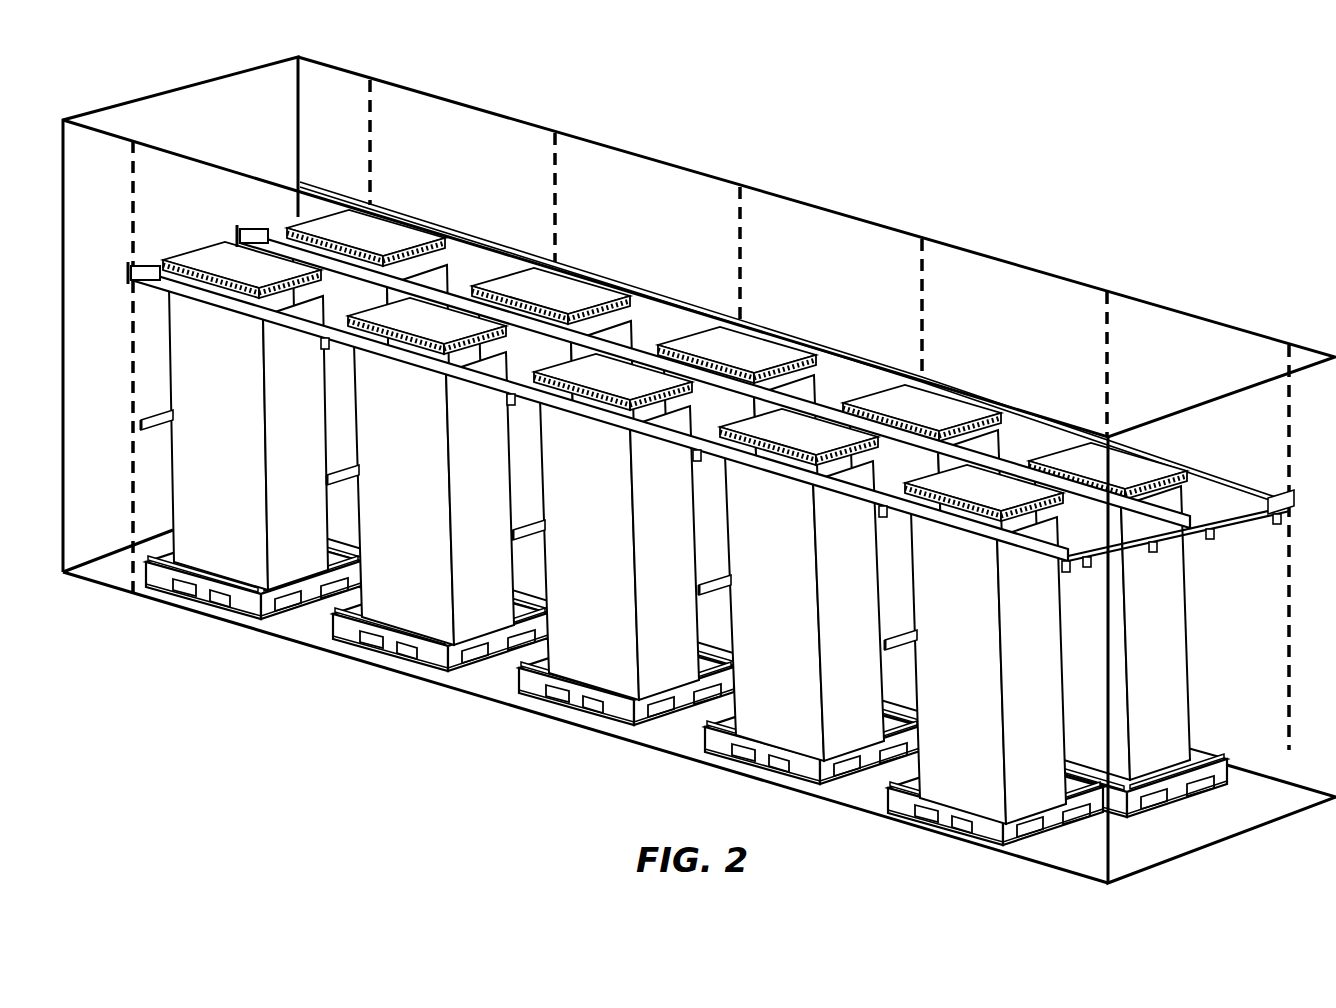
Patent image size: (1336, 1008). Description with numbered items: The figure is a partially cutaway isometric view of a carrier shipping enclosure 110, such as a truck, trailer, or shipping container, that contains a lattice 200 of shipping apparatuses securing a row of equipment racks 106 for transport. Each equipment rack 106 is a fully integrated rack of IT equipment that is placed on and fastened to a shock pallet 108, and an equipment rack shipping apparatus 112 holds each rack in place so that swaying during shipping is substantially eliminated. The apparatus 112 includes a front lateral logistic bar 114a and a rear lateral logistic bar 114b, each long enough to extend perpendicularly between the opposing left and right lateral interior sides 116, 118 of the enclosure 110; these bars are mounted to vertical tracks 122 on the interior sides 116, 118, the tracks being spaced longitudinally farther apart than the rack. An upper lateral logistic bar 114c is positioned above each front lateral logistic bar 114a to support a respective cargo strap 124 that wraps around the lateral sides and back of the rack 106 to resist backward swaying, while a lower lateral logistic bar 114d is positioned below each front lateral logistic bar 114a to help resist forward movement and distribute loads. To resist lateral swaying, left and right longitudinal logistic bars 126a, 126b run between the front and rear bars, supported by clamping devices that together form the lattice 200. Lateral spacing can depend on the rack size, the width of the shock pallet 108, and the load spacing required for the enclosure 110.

The carrier shipping enclosure 110 is at (1208, 318).
The left lateral interior side 116 is at (186, 186).
The right lateral interior side 118 is at (1000, 296).
The equipment rack 106 is at (250, 508).
The shock pallet 108 is at (253, 613).
The equipment rack shipping apparatus 112 is at (648, 440).
The vertical tracks 122 is at (557, 180).
The cargo strap 124 is at (780, 365).
The left longitudinal logistic bar 126a is at (338, 250).
The right longitudinal logistic bar 126b is at (342, 303).
The lattice 200 is at (830, 360).
The front lateral logistic bar 114a is at (157, 284).
The rear lateral logistic bar 114b is at (322, 349).
The upper lateral logistic bar 114c is at (264, 228).
The lower lateral logistic bar 114d is at (697, 593).